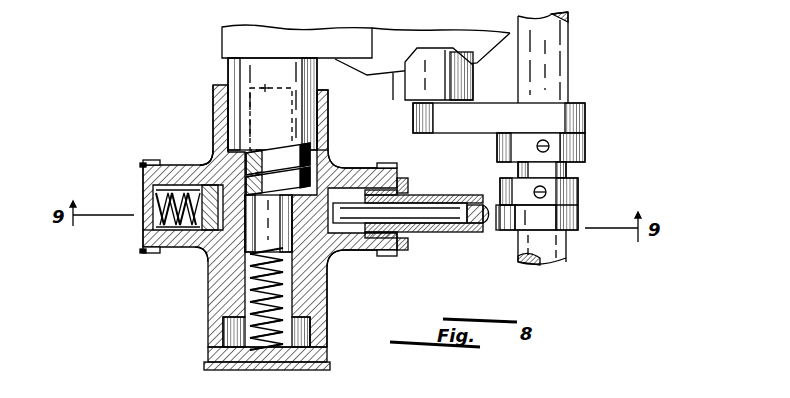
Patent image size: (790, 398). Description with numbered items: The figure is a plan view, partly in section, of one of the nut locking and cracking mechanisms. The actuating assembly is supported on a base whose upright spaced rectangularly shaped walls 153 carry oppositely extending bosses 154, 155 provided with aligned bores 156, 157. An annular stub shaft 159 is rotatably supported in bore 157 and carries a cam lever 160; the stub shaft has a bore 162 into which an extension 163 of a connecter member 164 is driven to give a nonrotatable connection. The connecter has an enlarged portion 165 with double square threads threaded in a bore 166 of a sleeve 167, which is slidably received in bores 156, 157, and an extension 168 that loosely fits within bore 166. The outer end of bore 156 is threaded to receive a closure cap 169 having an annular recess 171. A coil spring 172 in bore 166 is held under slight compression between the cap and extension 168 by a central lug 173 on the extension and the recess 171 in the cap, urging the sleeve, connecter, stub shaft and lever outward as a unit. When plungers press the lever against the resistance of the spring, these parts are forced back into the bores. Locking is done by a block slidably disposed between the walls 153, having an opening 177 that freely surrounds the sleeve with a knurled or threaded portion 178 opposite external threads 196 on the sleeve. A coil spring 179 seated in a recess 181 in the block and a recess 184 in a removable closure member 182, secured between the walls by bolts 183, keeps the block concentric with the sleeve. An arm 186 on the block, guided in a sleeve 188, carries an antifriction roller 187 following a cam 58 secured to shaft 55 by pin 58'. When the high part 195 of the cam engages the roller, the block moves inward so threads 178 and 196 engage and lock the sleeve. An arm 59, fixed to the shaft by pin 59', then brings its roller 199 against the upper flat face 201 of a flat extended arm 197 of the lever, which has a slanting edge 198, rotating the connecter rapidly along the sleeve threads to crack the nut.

The shaft 55 is at (553, 62).
The cam 58 is at (565, 216).
The pin 58' is at (563, 200).
The arm 59 is at (499, 102).
The pin 59' is at (566, 149).
The upright walls 153 is at (155, 160).
The boss 154 is at (316, 328).
The boss 155 is at (213, 94).
The bore 156 is at (223, 324).
The bore 157 is at (330, 104).
The annular stub shaft 159 is at (237, 69).
The cam lever 160 is at (276, 27).
The bore 162 is at (271, 106).
The extension 163 is at (213, 122).
The connecter member 164 is at (215, 148).
The enlarged portion 165 is at (325, 158).
The bore 166 is at (331, 170).
The sleeve 167 is at (314, 303).
The extension 168 is at (254, 163).
The closure plug or cap 169 is at (227, 371).
The annular recess 171 is at (316, 358).
The coil spring 172 is at (250, 337).
The lug 173 is at (222, 285).
The opening 177 is at (212, 245).
The knurled or threaded portion 178 is at (334, 250).
The coil spring 179 is at (155, 196).
The recess 181 is at (190, 233).
The removable closure member 182 is at (143, 220).
The bolts 183 is at (143, 163).
The recess 184 is at (143, 229).
The arm 186 is at (453, 234).
The antifriction roller 187 is at (483, 235).
The sleeve 188 is at (445, 200).
The high part of cam 195 is at (501, 236).
The external threads 196 is at (210, 166).
The extended arm 197 is at (467, 45).
The slanting edge 198 is at (392, 97).
The roller 199 is at (430, 62).
The upper flat face 201 is at (408, 27).